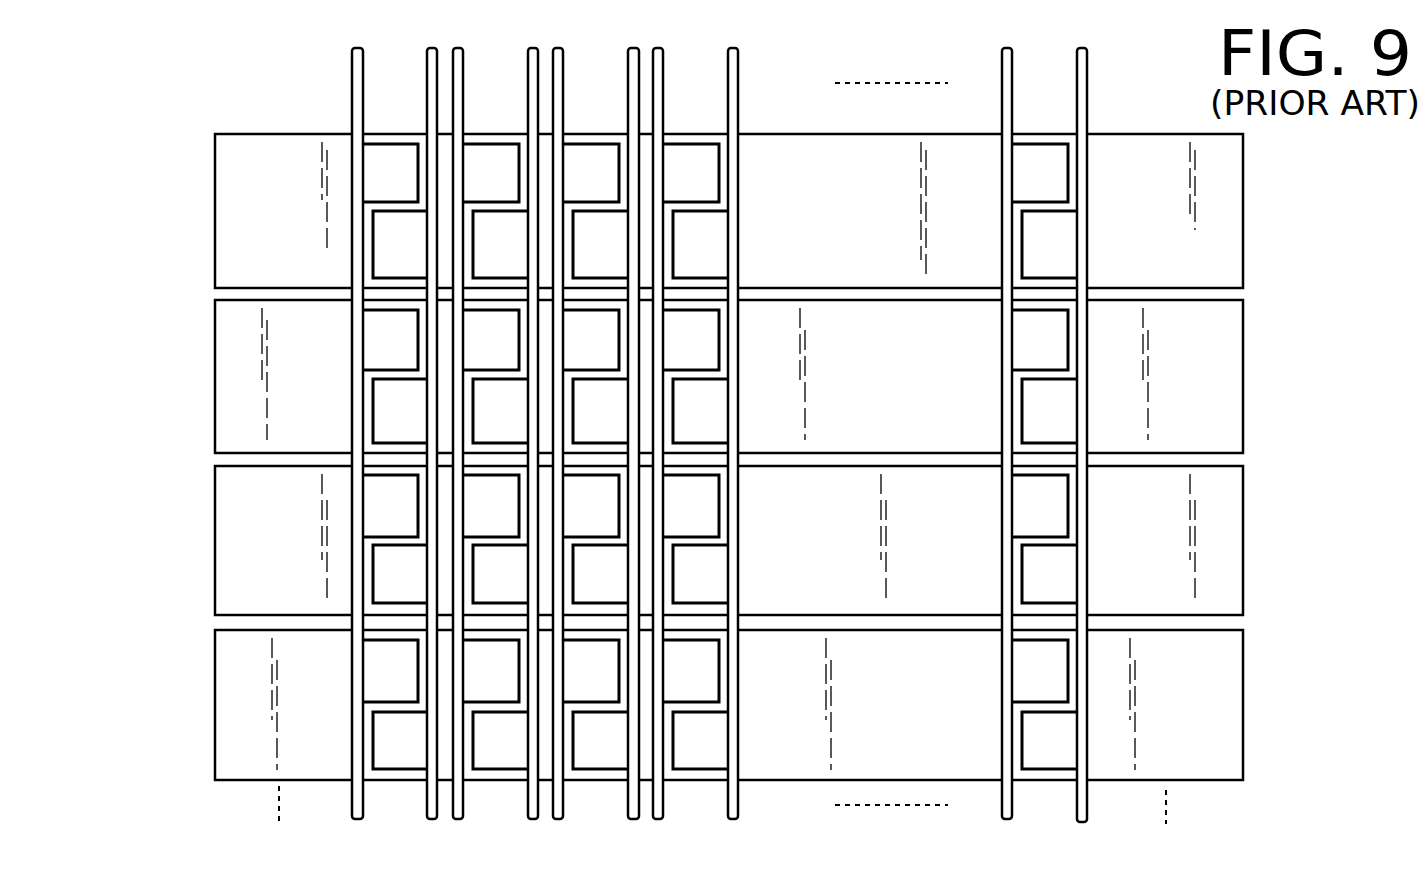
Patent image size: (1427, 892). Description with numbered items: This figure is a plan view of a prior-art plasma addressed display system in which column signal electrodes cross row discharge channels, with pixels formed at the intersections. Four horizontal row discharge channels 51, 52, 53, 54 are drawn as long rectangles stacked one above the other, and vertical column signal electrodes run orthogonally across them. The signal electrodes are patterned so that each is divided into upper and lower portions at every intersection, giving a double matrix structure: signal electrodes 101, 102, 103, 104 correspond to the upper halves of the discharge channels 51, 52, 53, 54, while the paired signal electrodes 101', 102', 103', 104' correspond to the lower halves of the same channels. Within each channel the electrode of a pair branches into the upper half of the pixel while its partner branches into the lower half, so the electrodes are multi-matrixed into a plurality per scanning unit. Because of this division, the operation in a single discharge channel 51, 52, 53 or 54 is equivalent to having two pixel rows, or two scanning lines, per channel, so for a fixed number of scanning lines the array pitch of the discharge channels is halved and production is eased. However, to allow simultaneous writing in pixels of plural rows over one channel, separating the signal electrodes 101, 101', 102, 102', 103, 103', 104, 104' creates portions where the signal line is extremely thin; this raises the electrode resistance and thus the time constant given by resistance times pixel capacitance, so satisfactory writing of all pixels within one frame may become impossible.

The discharge channel 51 is at (1243, 218).
The discharge channel 52 is at (1243, 382).
The discharge channel 53 is at (1243, 548).
The discharge channel 54 is at (1243, 712).
The signal electrode 101 is at (344, 433).
The signal electrode 101' is at (403, 425).
The signal electrode 102 is at (489, 433).
The signal electrode 102' is at (503, 425).
The signal electrode 103 is at (589, 433).
The signal electrode 103' is at (603, 425).
The signal electrode 104 is at (686, 433).
The signal electrode 104' is at (746, 433).